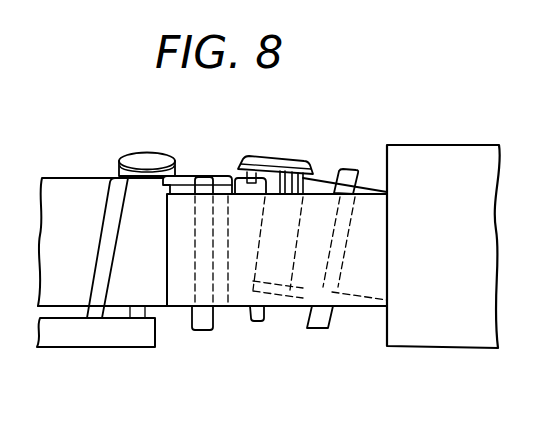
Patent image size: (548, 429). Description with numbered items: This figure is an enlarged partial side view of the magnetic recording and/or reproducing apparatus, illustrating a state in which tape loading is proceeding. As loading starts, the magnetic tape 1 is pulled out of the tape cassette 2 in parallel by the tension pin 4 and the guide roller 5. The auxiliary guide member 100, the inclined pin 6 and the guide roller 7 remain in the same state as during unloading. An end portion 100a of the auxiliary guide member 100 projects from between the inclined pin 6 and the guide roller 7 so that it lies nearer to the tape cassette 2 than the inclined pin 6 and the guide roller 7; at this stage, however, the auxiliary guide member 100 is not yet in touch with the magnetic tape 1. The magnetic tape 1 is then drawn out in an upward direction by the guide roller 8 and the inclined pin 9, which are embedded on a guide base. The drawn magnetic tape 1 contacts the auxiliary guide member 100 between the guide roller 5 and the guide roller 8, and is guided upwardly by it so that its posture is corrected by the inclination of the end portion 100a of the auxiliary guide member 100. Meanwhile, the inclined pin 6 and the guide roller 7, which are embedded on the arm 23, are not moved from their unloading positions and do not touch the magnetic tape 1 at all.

The auxiliary guide member 100 is at (68, 197).
The end portion of the auxiliary guide member 100a is at (261, 192).
The inclined pin 6 is at (115, 197).
The guide roller 7 is at (146, 158).
The guide roller 5 is at (183, 183).
The tension pin 4 is at (205, 180).
The guide roller 8 is at (258, 162).
The inclined pin 9 is at (348, 175).
The magnetic tape 1 is at (371, 190).
The tape cassette 2 is at (422, 162).
The arm 23 is at (133, 340).